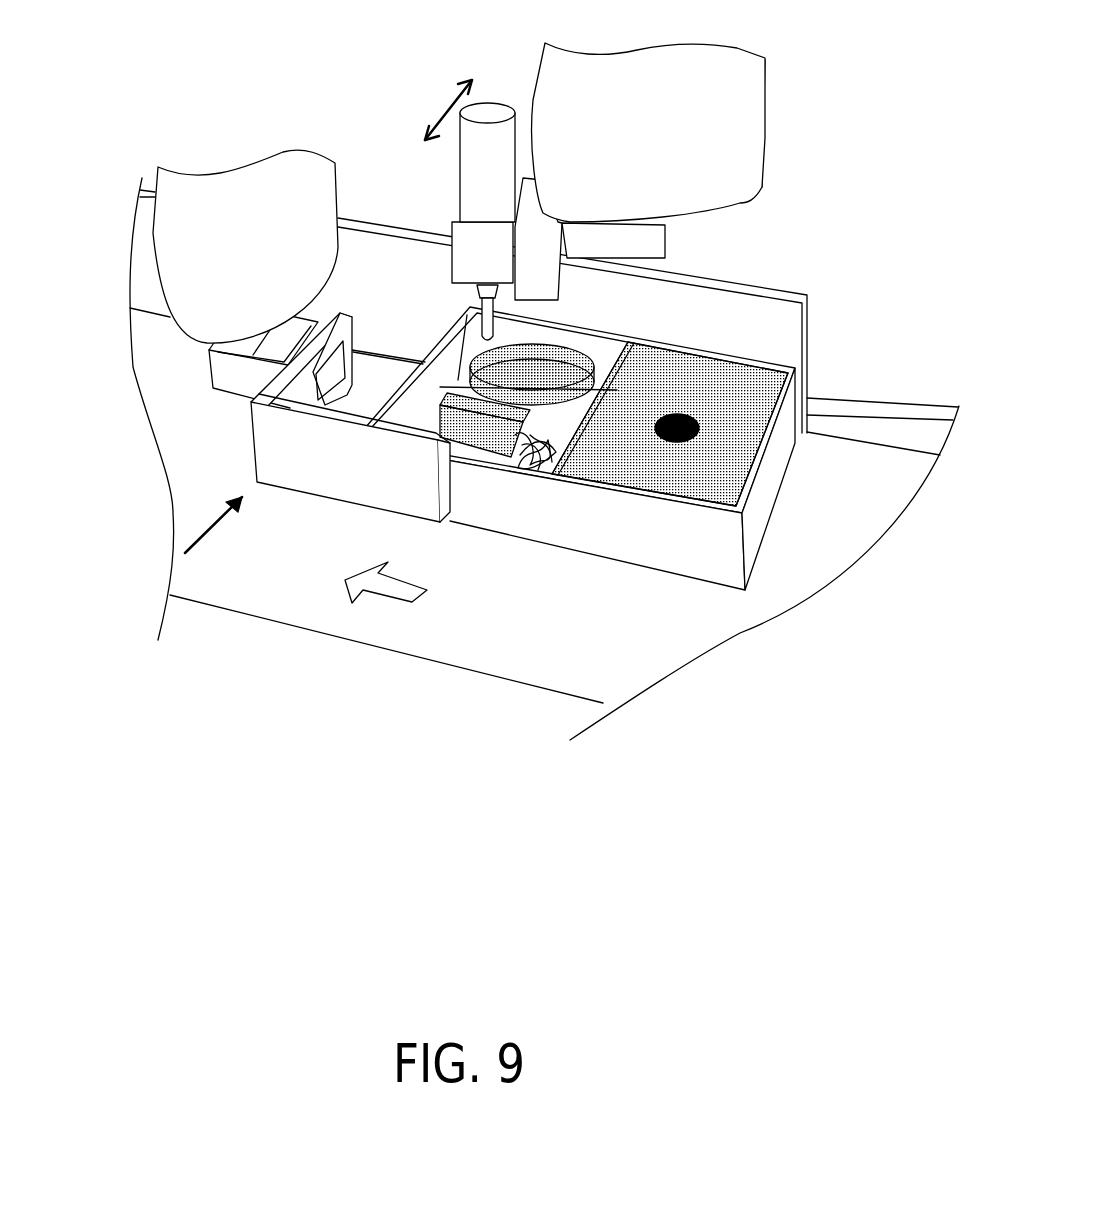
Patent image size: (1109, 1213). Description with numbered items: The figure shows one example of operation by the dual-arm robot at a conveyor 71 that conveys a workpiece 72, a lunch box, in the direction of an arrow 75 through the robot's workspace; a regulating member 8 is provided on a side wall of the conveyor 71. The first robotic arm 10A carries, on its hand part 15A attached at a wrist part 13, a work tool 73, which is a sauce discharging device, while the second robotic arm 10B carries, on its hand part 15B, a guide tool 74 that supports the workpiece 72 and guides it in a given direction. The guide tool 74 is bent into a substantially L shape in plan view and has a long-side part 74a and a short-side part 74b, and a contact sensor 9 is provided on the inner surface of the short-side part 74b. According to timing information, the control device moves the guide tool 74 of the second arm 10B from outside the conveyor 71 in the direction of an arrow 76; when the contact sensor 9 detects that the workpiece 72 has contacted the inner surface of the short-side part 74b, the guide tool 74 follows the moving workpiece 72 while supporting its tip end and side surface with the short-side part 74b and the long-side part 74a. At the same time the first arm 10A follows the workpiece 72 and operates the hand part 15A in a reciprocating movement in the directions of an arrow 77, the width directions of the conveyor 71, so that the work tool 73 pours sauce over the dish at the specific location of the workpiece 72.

The regulating member 8 is at (790, 293).
The contact sensor 9 is at (357, 365).
The first robotic arm 10A is at (778, 70).
The second robotic arm 10B is at (175, 148).
The wrist part 13 is at (157, 255).
The hand part of the first robotic arm 15A is at (435, 195).
The hand part of the second robotic arm 15B is at (178, 353).
The conveyor 71 is at (503, 648).
The workpiece 72 is at (672, 552).
The work tool 73 is at (490, 103).
The guide tool 74 is at (263, 411).
The long-side part 74a is at (265, 457).
The short-side part 74b is at (343, 320).
The arrow (conveying direction) 75 is at (383, 603).
The arrow (guide tool moving direction) 76 is at (211, 540).
The arrow (reciprocating directions) 77 is at (442, 107).